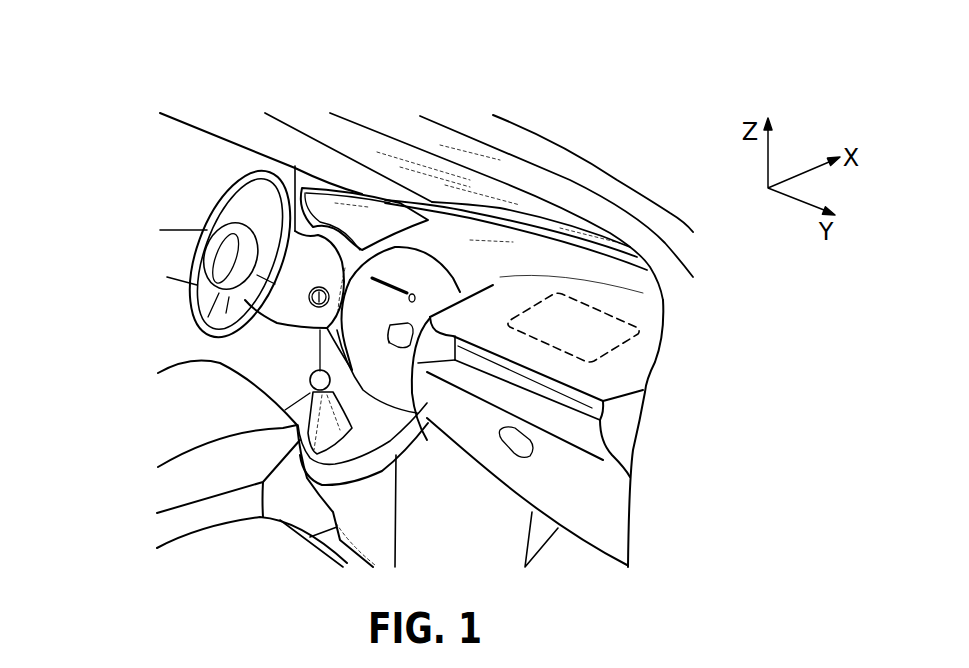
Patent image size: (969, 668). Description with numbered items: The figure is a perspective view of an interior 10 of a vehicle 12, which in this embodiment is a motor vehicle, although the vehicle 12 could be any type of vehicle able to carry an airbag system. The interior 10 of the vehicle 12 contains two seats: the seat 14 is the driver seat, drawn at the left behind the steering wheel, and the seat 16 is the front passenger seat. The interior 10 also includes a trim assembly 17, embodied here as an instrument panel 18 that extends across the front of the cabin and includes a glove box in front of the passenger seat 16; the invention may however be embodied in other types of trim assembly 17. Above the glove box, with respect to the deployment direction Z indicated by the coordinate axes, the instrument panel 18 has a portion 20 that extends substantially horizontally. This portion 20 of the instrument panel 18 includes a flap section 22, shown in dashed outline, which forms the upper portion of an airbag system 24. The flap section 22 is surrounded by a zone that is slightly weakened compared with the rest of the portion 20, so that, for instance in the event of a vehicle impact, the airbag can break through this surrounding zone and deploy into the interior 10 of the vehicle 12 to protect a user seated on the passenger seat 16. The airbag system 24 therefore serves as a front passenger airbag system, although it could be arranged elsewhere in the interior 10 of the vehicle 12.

The interior 10 is at (156, 176).
The vehicle 12 is at (608, 133).
The seat 14 is at (178, 432).
The seat 16 is at (197, 548).
The trim assembly 17 is at (512, 294).
The instrument panel 18 is at (472, 312).
The portion 20 is at (655, 308).
The flap section 22 is at (615, 358).
The airbag system 24 is at (619, 338).